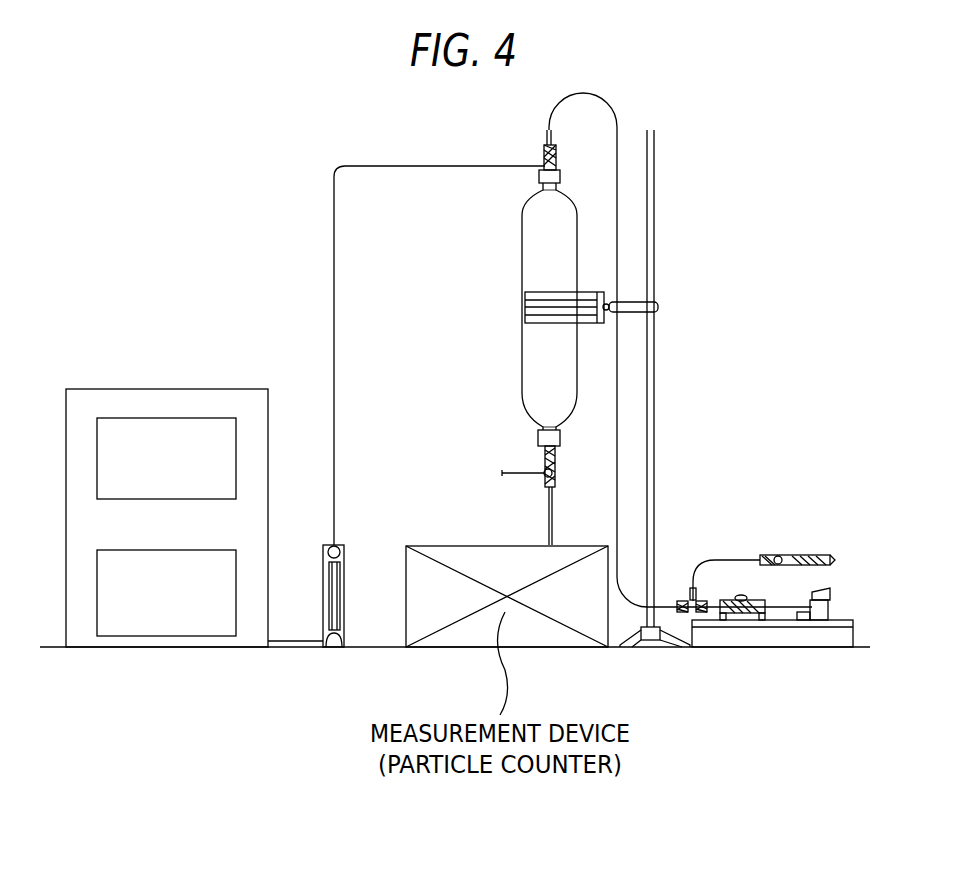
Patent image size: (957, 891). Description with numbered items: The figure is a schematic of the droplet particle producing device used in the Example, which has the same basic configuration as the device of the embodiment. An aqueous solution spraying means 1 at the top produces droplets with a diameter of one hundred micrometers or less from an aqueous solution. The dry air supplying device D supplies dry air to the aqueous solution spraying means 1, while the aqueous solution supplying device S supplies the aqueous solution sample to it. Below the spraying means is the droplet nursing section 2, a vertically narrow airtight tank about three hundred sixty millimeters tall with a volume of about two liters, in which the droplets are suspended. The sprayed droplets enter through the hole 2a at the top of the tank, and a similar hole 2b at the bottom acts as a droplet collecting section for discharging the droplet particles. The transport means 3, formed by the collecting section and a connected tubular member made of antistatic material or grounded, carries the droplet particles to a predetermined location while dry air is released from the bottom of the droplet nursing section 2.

The aqueous solution spraying means 1 is at (542, 163).
The droplet nursing section 2 is at (522, 273).
The hole 2a is at (545, 193).
The hole 2b is at (548, 428).
The transport means 3 is at (568, 447).
The dry air supplying device D is at (175, 385).
The aqueous solution supplying device S is at (748, 650).